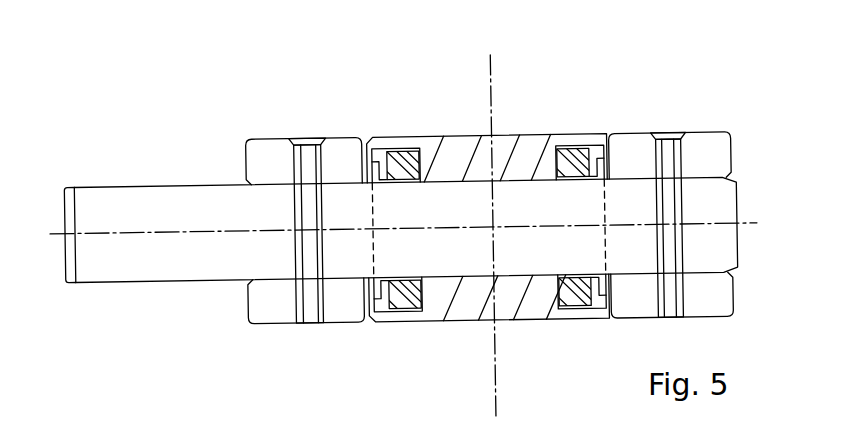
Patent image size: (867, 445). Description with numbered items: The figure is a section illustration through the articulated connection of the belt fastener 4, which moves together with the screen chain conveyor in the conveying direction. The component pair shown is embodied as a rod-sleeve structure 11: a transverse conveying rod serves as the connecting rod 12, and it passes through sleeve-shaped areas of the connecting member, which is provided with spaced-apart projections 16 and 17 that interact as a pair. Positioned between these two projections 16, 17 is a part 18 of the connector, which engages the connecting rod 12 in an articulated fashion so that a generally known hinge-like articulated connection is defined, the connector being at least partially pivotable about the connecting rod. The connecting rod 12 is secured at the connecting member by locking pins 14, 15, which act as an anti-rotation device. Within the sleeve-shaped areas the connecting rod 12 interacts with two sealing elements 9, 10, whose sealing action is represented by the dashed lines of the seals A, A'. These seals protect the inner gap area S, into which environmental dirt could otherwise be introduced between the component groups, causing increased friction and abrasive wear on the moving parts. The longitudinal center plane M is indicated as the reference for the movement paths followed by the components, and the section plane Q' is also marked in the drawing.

The belt fastener 4 is at (233, 105).
The sealing element 9 is at (415, 145).
The sealing element 10 is at (582, 145).
The rod-sleeve structure 11 is at (238, 290).
The connecting rod 12 is at (113, 200).
The locking pin 14 is at (303, 148).
The locking pin 15 is at (668, 147).
The projection 16 is at (258, 153).
The projection 17 is at (708, 148).
The part of the connector 18 is at (442, 325).
The longitudinal center plane M is at (498, 378).
The gap area S is at (512, 148).
The seal A is at (564, 205).
The seal A' is at (403, 205).
The section plane Q' is at (69, 282).